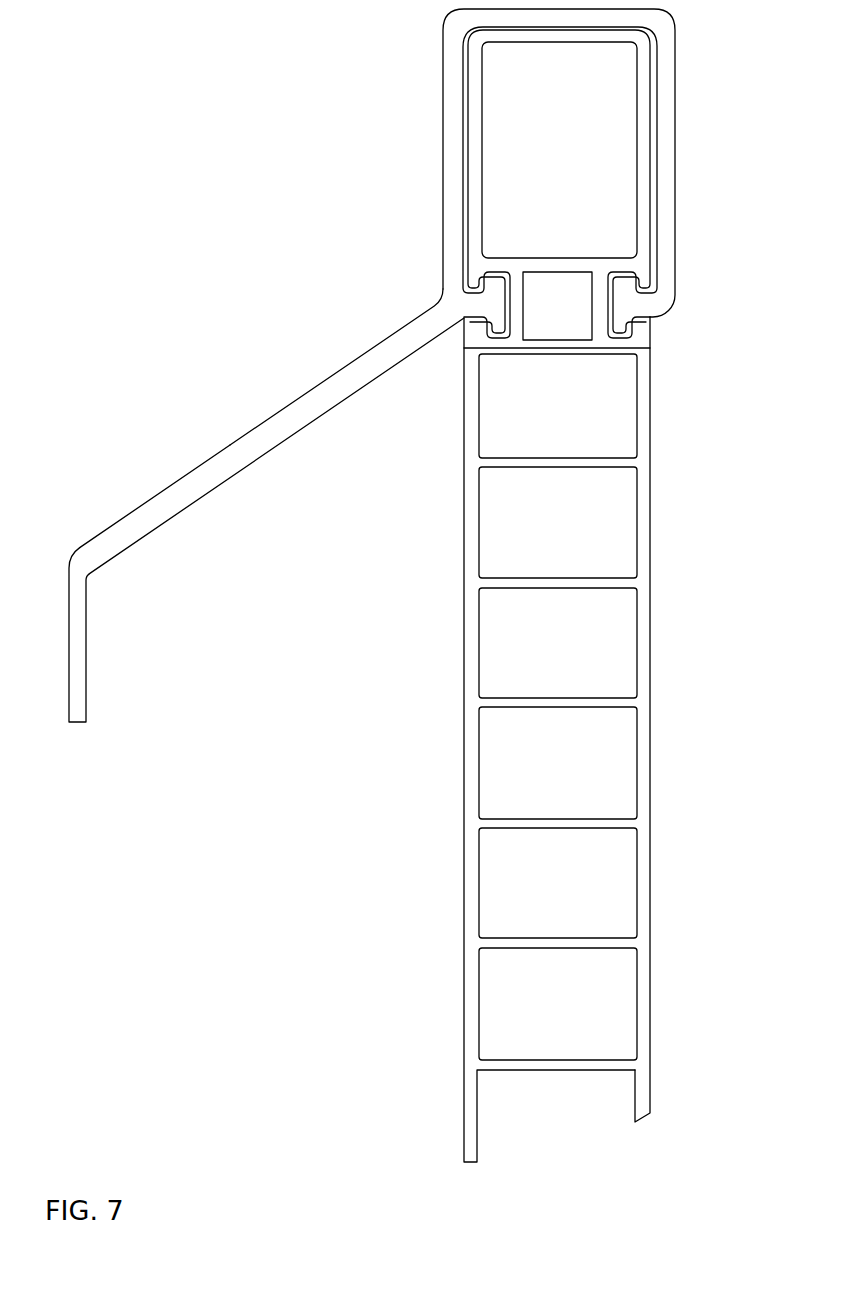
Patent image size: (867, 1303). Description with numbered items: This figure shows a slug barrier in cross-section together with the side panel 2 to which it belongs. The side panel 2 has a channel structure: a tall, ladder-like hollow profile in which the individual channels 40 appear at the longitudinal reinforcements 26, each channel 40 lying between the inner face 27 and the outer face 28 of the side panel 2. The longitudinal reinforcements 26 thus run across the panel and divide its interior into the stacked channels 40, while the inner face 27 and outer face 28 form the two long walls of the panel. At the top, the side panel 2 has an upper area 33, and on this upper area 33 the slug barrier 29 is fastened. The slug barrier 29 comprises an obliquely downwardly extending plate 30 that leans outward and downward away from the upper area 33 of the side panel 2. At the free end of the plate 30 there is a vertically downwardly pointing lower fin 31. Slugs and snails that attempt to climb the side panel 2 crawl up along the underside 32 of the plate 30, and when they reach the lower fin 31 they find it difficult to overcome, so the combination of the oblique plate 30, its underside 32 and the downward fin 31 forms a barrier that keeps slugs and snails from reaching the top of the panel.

The side panel 2 is at (677, 746).
The longitudinal reinforcements 26 is at (614, 564).
The inner face 27 is at (658, 604).
The outer face 28 is at (575, 704).
The slug barrier 29 is at (139, 539).
The obliquely downwardly extending plate 30 is at (194, 510).
The lower fin 31 is at (100, 676).
The underside of the plate 32 is at (249, 483).
The upper area 33 is at (566, 237).
The channels 40 is at (591, 412).